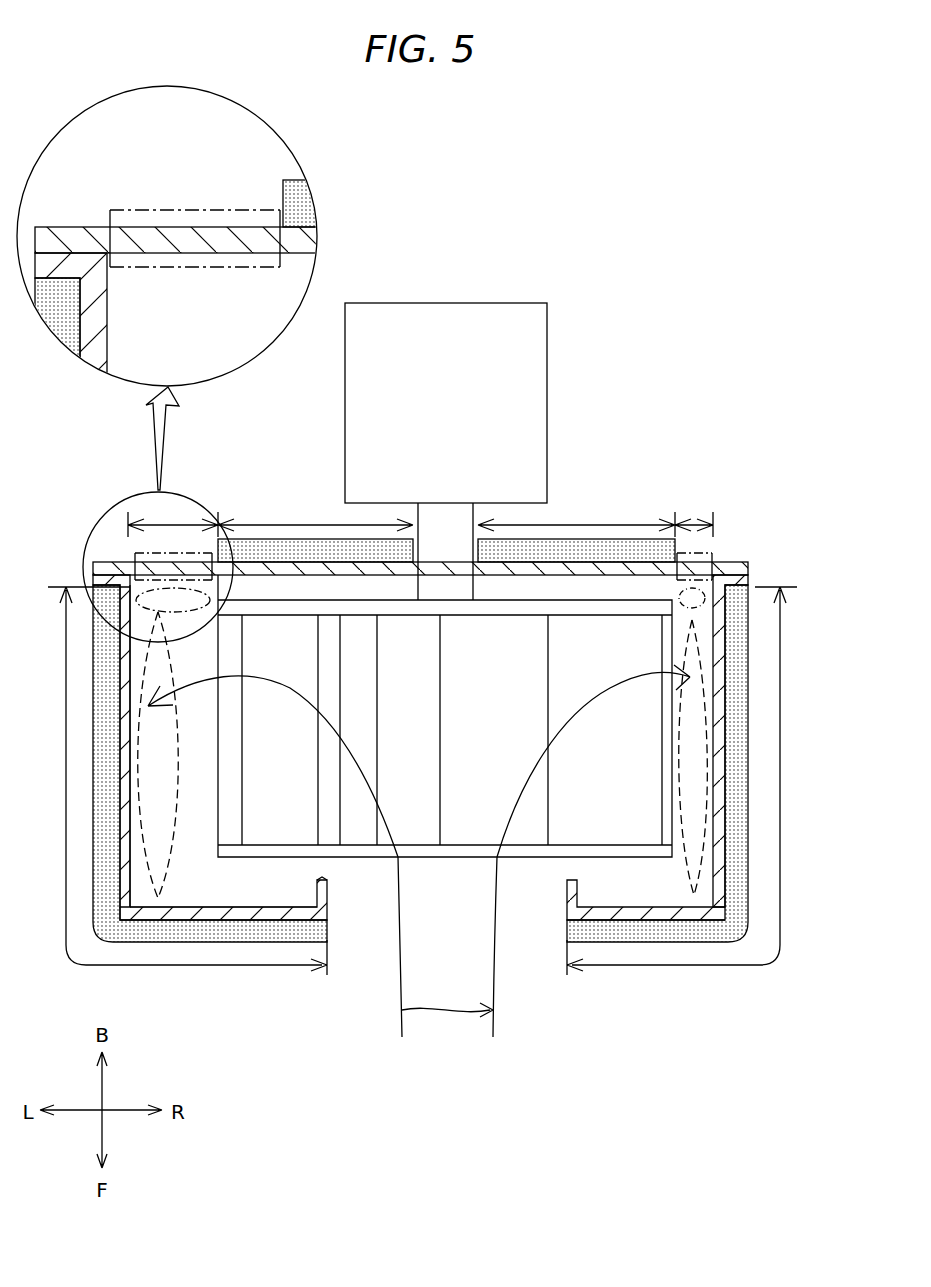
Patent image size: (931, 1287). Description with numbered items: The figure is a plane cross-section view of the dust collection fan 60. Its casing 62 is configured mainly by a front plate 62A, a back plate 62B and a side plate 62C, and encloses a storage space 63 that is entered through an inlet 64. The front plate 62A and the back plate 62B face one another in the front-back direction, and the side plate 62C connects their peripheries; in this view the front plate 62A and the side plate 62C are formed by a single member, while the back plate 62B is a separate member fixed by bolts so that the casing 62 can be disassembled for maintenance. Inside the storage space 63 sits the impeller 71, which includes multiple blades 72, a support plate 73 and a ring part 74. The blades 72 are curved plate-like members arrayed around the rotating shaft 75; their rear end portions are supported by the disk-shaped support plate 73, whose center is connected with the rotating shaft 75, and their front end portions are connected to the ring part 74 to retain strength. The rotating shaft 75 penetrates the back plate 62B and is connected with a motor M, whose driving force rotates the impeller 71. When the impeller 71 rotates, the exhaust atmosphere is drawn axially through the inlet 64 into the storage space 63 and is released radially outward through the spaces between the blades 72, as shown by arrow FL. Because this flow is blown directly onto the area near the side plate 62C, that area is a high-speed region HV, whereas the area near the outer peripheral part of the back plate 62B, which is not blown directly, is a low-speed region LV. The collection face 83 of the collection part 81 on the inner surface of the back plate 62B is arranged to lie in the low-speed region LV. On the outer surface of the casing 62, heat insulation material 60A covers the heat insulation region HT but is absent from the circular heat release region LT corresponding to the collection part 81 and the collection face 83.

The dust collection fan 60 is at (678, 406).
The heat insulation material 60A is at (258, 545).
The casing 62 is at (748, 710).
The front plate 62A is at (268, 912).
The back plate 62B is at (749, 569).
The side plate 62C is at (746, 650).
The storage space 63 is at (272, 894).
The inlet 64 is at (330, 893).
The impeller 71 is at (430, 858).
The blades 72 is at (232, 765).
The support plate 73 is at (493, 608).
The ring part 74 is at (472, 850).
The rotating shaft 75 is at (455, 512).
The collection part 81 is at (123, 538).
The collection face 83 is at (200, 583).
The motor M is at (547, 395).
The flow of exhaust atmosphere FL is at (419, 845).
The low-speed region LV is at (197, 604).
The high-speed region HV is at (183, 870).
The heat insulation region HT is at (422, 736).
The heat release region LT is at (420, 513).